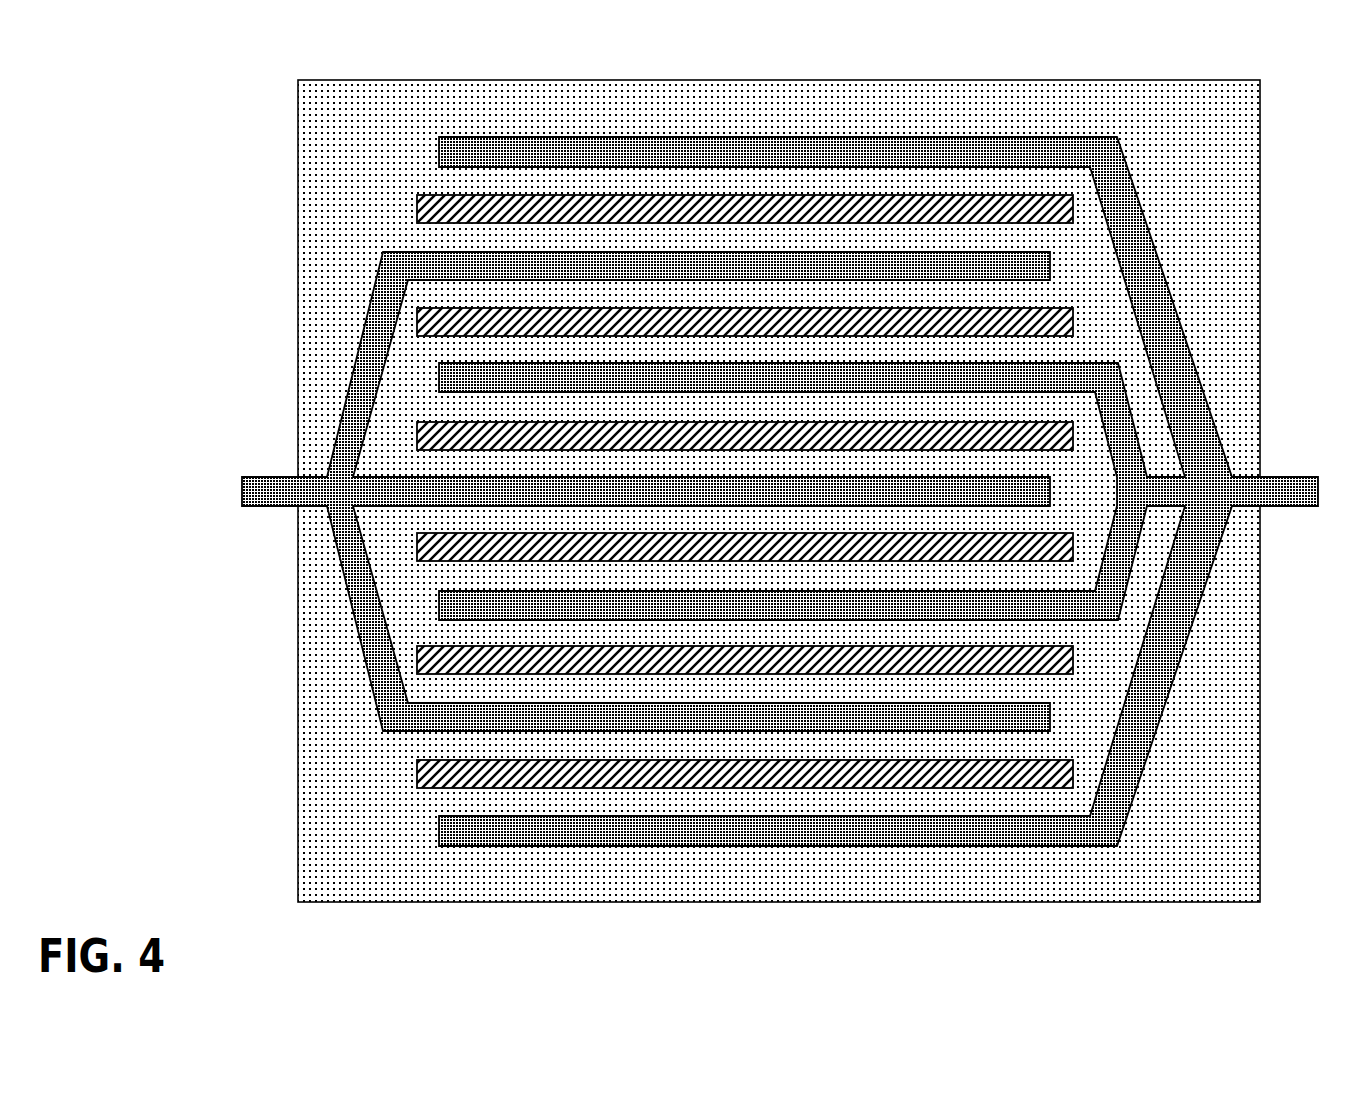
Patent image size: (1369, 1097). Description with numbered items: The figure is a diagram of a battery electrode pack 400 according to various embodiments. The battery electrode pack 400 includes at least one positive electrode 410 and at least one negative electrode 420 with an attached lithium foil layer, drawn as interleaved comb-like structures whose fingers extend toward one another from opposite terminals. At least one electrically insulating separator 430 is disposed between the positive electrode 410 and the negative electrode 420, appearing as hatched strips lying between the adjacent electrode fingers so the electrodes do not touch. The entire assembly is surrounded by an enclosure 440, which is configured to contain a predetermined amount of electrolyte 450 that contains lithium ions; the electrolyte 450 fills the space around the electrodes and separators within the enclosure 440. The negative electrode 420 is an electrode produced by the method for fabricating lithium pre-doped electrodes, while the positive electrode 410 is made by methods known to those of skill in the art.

The battery electrode pack 400 is at (658, 477).
The positive electrode 410 is at (267, 475).
The negative electrode 420 is at (1282, 476).
The electrically insulating separator 430 is at (417, 210).
The enclosure 440 is at (300, 677).
The electrolyte 450 is at (326, 843).